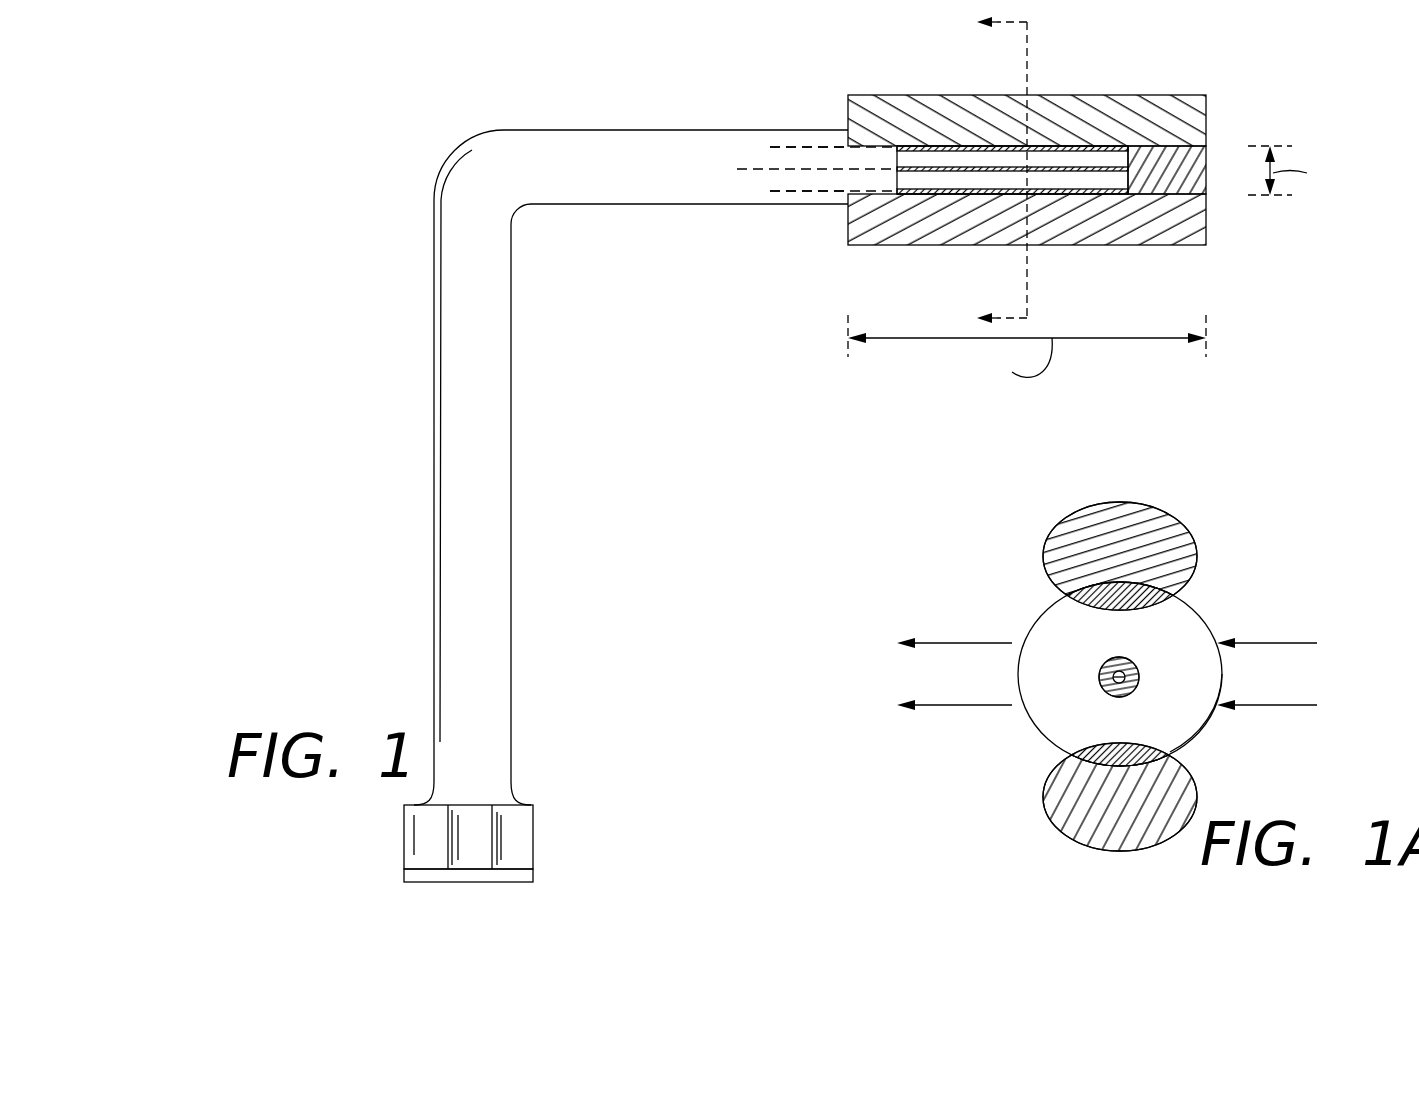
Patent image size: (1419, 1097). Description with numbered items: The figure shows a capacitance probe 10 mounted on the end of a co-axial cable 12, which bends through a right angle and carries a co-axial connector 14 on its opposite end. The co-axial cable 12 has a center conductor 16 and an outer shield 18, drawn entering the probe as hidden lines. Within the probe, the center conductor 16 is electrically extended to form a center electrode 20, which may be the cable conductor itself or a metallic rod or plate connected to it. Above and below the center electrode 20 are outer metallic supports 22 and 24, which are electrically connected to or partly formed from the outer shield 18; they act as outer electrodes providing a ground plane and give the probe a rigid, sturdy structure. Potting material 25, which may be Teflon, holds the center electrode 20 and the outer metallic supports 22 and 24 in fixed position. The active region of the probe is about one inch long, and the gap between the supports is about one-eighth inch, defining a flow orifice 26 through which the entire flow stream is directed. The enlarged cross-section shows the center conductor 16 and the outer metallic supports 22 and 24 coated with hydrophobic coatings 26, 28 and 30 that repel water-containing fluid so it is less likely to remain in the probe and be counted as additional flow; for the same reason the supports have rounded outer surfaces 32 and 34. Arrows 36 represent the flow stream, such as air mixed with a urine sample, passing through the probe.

In FIG. 1, the capacitance probe 10 is at (788, 75).
In FIG. 1, the co-axial cable 12 is at (515, 297).
In FIG. 1, the co-axial connector 14 is at (535, 840).
In FIG. 1, the center conductor 16 is at (748, 170).
In FIG. 1A, the center conductor 16 is at (1139, 680).
In FIG. 1, the outer shield 18 is at (802, 193).
In FIG. 1, the center electrode 20 is at (1077, 175).
In FIG. 1, the outer metallic support 22 is at (1127, 117).
In FIG. 1A, the outer metallic support 22 is at (1072, 532).
In FIG. 1, the outer metallic support 24 is at (1177, 222).
In FIG. 1A, the outer metallic support 24 is at (1075, 812).
In FIG. 1, the potting material 25 is at (1197, 170).
In FIG. 1, the flow orifice 26 is at (940, 158).
In FIG. 1A, the flow orifice 26 is at (1128, 657).
In FIG. 1A, the coating 28 is at (1165, 593).
In FIG. 1A, the coating 30 is at (1168, 730).
In FIG. 1A, the rounded outer surface 32 is at (1053, 578).
In FIG. 1A, the rounded outer surface 34 is at (1050, 778).
In FIG. 1A, the arrows 36 is at (1288, 643).